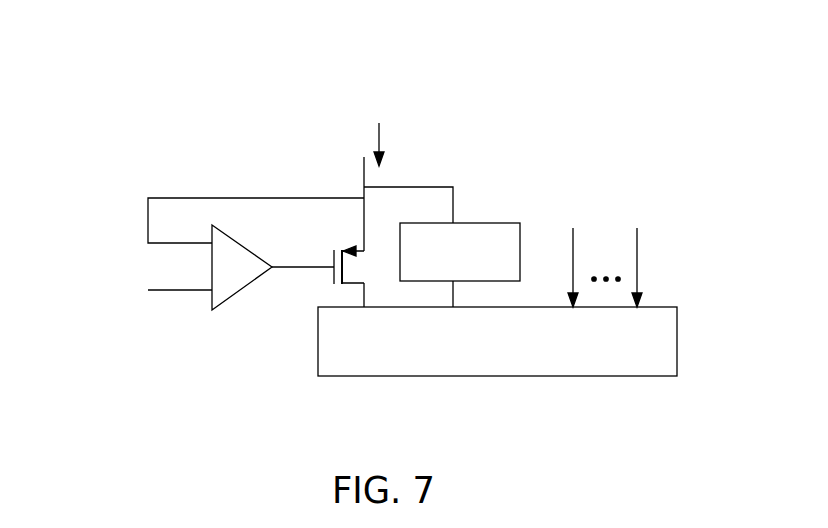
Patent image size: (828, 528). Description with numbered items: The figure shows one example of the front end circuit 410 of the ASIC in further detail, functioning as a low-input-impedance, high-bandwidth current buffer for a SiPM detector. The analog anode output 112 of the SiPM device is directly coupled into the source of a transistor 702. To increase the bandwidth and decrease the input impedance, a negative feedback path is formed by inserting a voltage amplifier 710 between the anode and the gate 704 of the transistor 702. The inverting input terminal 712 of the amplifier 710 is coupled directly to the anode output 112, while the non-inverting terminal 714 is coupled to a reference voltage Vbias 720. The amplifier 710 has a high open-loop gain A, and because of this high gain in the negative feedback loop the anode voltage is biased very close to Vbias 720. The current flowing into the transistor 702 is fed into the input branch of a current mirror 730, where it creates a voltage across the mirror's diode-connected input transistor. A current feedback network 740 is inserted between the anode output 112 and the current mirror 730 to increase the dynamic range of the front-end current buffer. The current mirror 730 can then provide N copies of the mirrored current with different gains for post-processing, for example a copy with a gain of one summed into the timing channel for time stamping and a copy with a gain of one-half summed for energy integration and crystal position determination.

The front end circuit 410 is at (534, 88).
The analog anode output 112 is at (383, 133).
The inverting input terminal 712 is at (145, 212).
The non-inverting terminal 714 is at (165, 290).
The reference voltage Vbias 720 is at (124, 328).
The voltage amplifier 710 is at (228, 302).
The gate 704 is at (292, 263).
The transistor 702 is at (333, 285).
The current feedback network 740 is at (495, 222).
The current mirror 730 is at (615, 377).